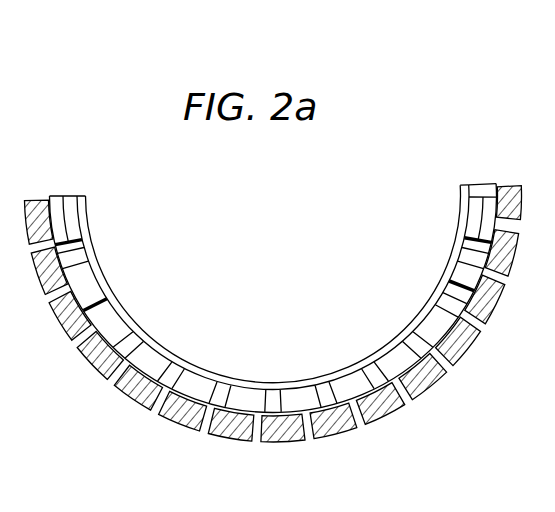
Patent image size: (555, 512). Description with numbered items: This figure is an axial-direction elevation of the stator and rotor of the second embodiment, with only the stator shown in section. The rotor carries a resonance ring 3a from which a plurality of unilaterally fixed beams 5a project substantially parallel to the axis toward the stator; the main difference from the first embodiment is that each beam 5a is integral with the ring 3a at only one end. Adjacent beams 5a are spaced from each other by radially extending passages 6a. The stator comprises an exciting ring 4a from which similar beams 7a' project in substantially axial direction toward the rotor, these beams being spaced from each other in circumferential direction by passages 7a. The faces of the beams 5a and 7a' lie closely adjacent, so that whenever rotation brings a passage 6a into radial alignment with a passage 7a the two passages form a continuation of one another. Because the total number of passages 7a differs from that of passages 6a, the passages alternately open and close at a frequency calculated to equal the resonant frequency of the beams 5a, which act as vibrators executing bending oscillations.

The resonance ring 3a is at (210, 373).
The exciting ring 4a is at (388, 416).
The unilaterally fixed beam 5a is at (148, 355).
The radially extending passage 6a is at (95, 304).
The passage 7a is at (274, 454).
The beam 7a' is at (141, 416).